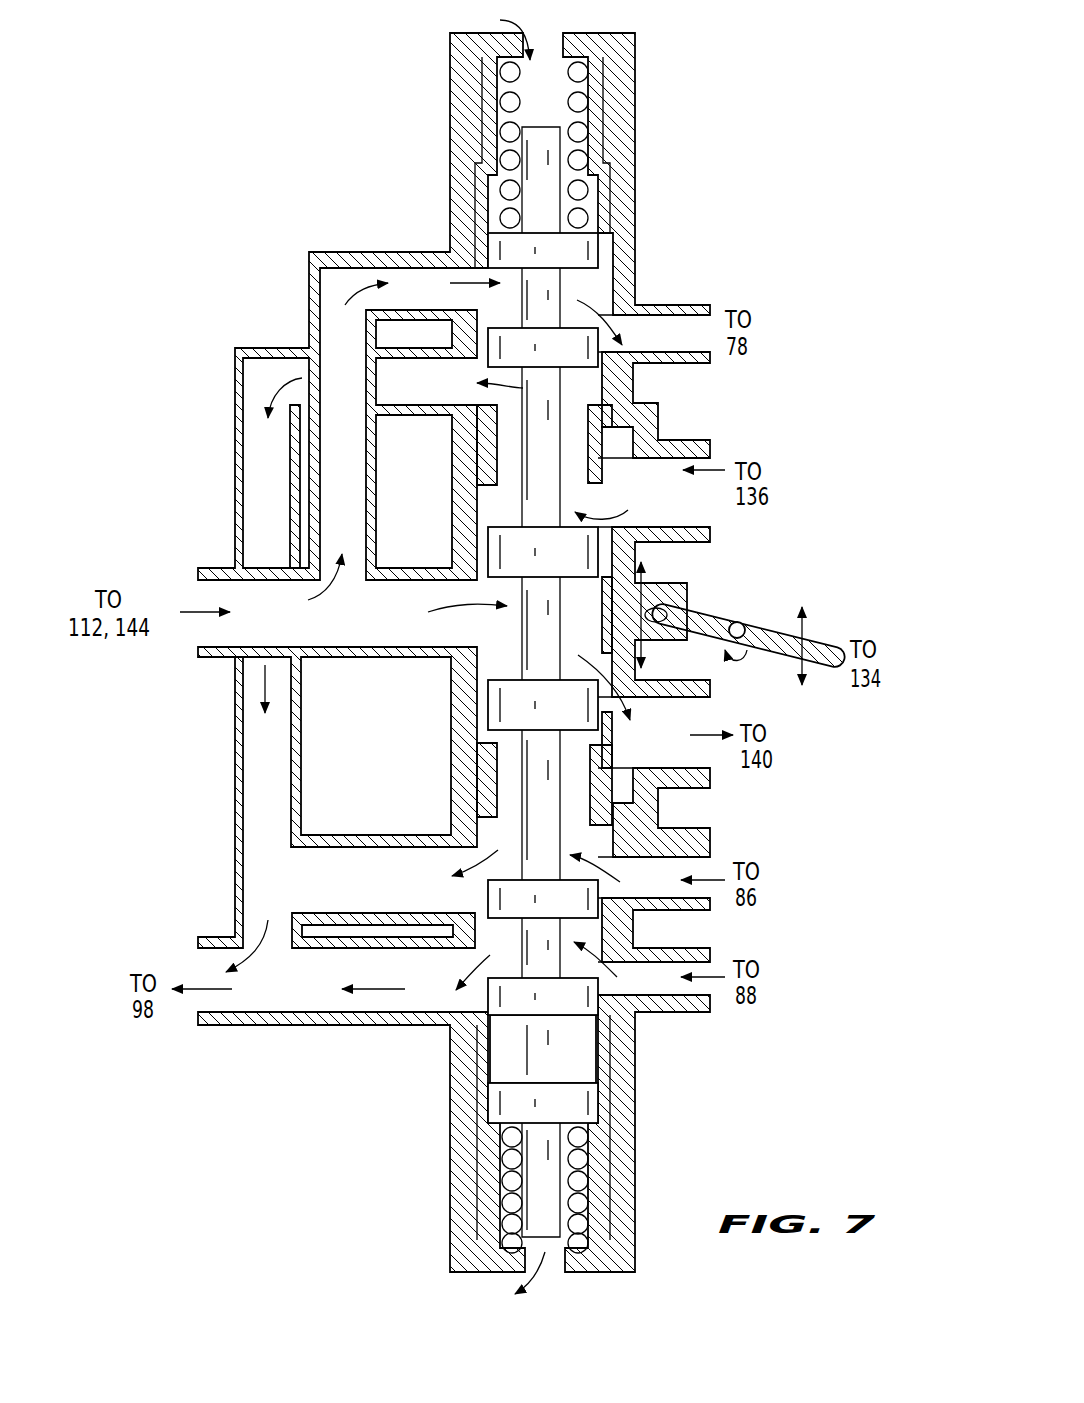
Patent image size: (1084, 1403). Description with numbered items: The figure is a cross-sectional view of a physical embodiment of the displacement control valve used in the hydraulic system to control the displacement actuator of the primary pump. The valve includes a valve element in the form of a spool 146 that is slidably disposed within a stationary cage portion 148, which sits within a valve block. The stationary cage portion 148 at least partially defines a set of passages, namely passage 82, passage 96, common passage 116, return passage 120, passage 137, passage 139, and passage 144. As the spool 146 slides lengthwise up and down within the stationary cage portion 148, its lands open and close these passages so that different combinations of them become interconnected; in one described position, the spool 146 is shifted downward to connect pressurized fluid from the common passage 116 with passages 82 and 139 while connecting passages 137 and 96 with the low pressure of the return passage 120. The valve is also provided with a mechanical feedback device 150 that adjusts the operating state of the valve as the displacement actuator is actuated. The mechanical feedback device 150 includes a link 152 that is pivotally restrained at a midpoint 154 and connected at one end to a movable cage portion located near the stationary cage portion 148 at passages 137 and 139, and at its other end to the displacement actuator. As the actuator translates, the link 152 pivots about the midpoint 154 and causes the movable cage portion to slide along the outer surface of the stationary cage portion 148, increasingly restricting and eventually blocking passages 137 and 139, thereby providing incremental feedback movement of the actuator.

The passage 144 is at (550, 43).
The passage 82 is at (671, 345).
The passage 137 is at (687, 517).
The passage 139 is at (670, 756).
The passage 96 is at (658, 892).
The common passage 116 is at (303, 632).
The return passage 120 is at (303, 993).
The spool 146 is at (548, 1025).
The stationary cage portion 148 is at (465, 1060).
The mechanical feedback device 150 is at (783, 545).
The link 152 is at (808, 658).
The midpoint 154 is at (737, 622).